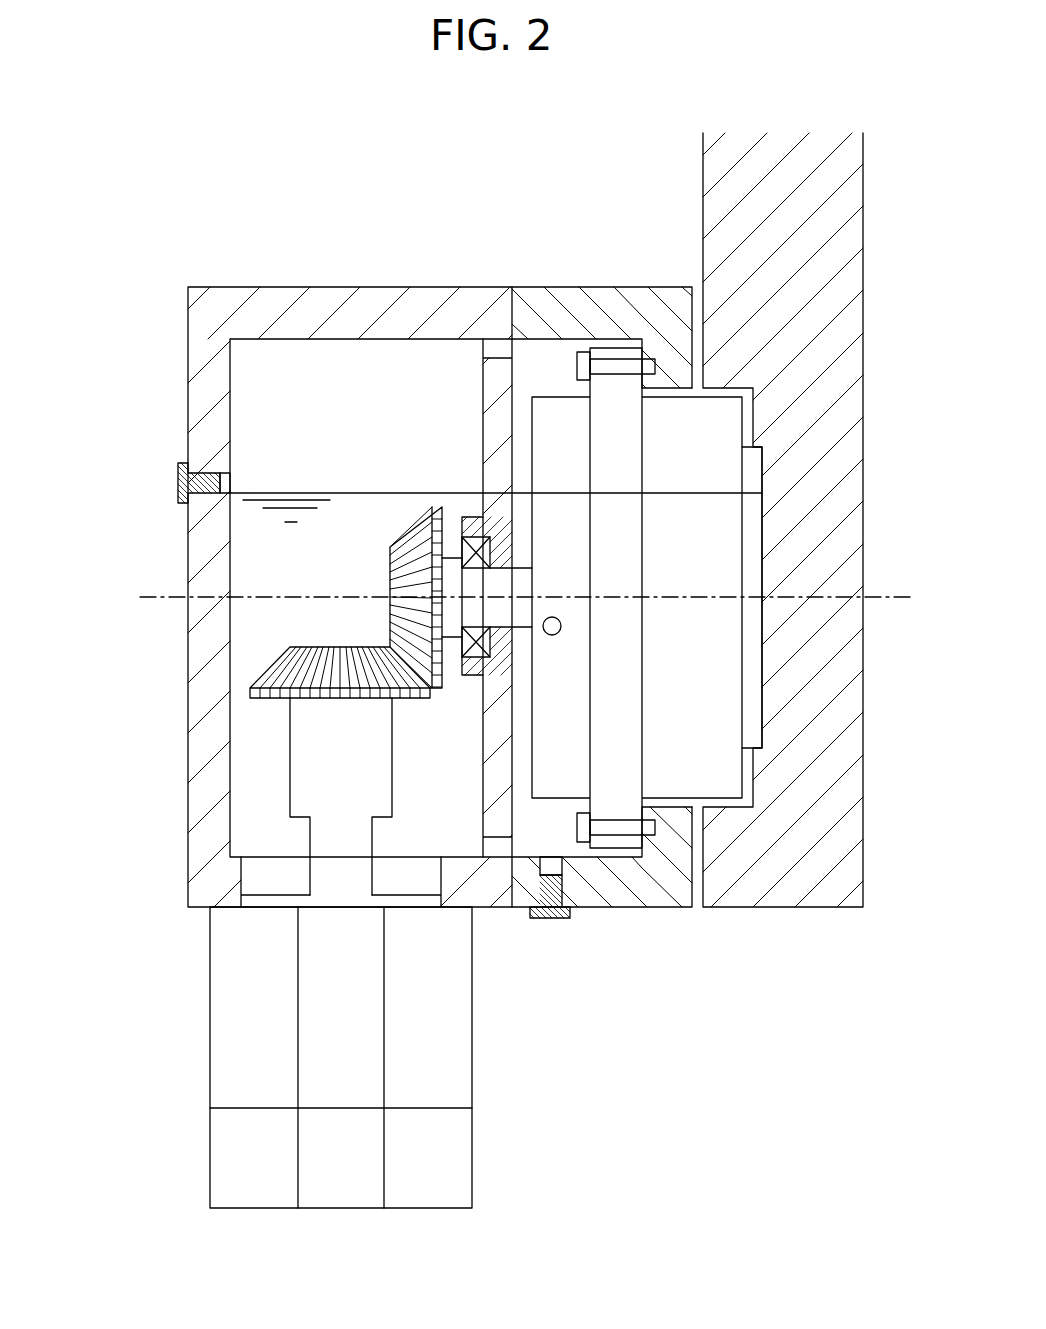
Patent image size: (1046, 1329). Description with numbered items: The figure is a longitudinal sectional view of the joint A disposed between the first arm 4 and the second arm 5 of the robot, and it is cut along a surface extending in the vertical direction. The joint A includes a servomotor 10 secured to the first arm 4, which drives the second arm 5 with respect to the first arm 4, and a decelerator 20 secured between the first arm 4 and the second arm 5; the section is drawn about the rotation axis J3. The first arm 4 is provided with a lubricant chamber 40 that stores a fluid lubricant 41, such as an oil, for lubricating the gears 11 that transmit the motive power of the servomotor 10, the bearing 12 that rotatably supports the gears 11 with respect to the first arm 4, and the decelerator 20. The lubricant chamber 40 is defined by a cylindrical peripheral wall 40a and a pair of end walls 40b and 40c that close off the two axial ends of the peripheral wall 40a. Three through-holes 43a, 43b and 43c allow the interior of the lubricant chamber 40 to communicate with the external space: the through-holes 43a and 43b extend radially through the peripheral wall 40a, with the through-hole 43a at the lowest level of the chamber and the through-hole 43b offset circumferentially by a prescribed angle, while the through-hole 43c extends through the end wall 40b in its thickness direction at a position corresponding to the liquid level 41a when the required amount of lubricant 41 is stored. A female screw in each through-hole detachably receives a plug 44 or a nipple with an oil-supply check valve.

The joint A is at (166, 256).
The first arm 4 is at (176, 830).
The second arm 5 is at (775, 908).
The servomotor 10 is at (195, 1062).
The gears 11 is at (412, 722).
The bearing 12 is at (467, 660).
The decelerator 20 is at (768, 708).
The lubricant chamber 40 is at (499, 552).
The peripheral wall 40a is at (302, 287).
The end wall 40b is at (188, 377).
The end wall 40c is at (693, 346).
The lubricant 41 is at (360, 534).
The liquid level 41a is at (428, 493).
The through-hole 43a is at (548, 860).
The through-hole 43b is at (561, 627).
The through-hole 43c is at (230, 482).
The plug 44 is at (178, 470).
The rotation axis J3 is at (504, 596).